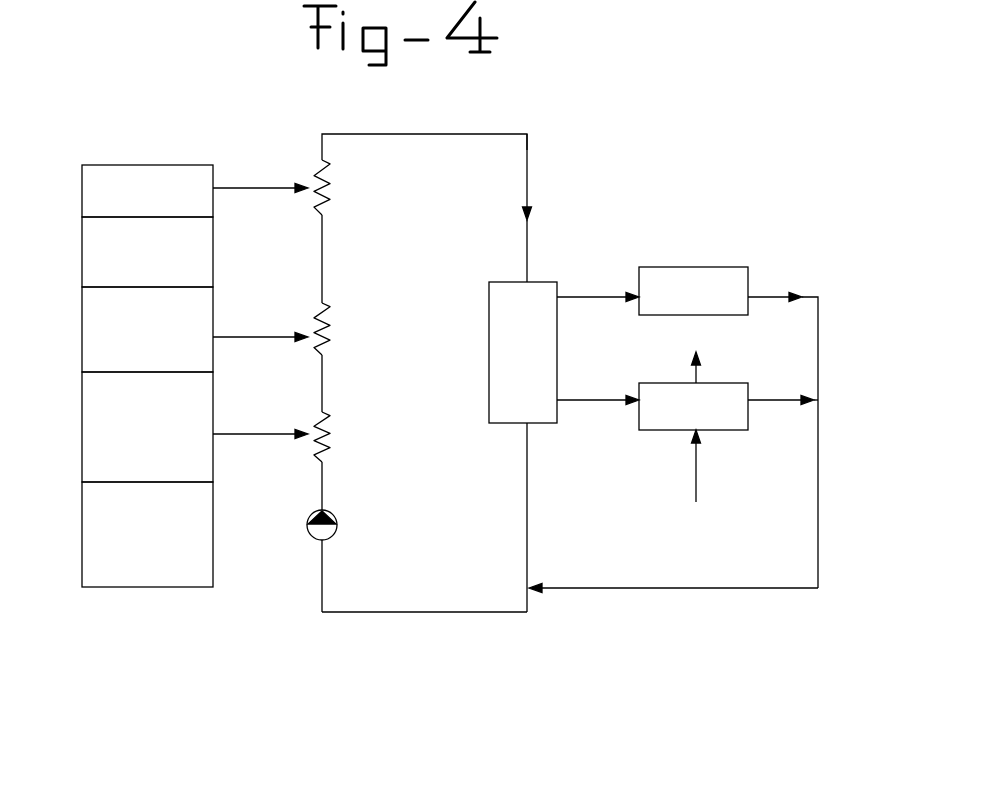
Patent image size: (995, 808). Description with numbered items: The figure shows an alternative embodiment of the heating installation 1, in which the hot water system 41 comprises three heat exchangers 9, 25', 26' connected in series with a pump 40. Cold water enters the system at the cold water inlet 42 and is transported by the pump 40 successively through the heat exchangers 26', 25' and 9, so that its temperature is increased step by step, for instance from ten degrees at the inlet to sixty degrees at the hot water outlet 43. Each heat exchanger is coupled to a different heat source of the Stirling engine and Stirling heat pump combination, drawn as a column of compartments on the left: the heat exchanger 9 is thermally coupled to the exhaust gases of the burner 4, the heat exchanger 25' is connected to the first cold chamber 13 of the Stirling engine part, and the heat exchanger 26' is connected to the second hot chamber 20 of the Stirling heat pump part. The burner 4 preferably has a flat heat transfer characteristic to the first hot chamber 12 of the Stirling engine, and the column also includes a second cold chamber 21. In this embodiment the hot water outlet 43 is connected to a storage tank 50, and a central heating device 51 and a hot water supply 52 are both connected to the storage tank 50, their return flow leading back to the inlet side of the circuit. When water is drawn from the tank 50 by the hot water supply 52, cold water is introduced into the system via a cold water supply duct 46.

The thermal system 1 is at (550, 117).
The burner 4 is at (92, 194).
The heat exchanger 9 is at (330, 196).
The first hot chamber 12 is at (90, 261).
The first cold chamber 13 is at (87, 335).
The second hot chamber 20 is at (94, 418).
The cold source C2 21 is at (94, 526).
The heat exchanger 25' is at (358, 331).
The heat exchanger 26' is at (358, 437).
The pump 40 is at (338, 526).
The hot water system 41 is at (563, 444).
The cold water inlet 42 is at (402, 612).
The hot water outlet 43 is at (419, 131).
The cold water supply duct 46 is at (695, 470).
The storage tank 50 is at (506, 423).
The central heating device 51 is at (697, 275).
The hot water supply 52 is at (718, 422).